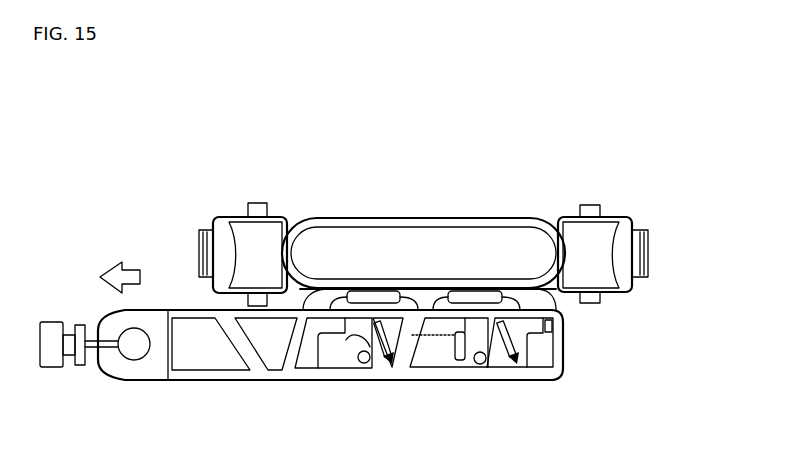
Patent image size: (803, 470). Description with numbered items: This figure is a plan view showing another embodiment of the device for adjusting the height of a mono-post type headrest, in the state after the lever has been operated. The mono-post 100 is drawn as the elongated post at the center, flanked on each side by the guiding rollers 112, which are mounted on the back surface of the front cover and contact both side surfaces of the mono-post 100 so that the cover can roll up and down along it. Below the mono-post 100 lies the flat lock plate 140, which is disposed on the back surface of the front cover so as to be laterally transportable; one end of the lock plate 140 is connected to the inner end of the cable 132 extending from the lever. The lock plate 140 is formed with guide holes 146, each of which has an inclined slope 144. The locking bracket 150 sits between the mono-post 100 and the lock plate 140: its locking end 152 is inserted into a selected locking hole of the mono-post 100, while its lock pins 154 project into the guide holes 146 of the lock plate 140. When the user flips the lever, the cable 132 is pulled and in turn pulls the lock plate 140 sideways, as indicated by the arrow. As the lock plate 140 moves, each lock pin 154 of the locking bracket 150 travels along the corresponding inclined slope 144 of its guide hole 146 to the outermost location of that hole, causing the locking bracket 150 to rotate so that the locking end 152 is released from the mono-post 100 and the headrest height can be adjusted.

The mono-post 100 is at (342, 208).
The guiding rollers 112 is at (242, 235).
The cable 132 is at (92, 347).
The lock plate 140 is at (570, 358).
The inclined slope 144 is at (346, 362).
The guide holes 146 is at (323, 360).
The locking bracket 150 is at (556, 304).
The locking end 152 is at (378, 298).
The lock pins 154 is at (370, 366).